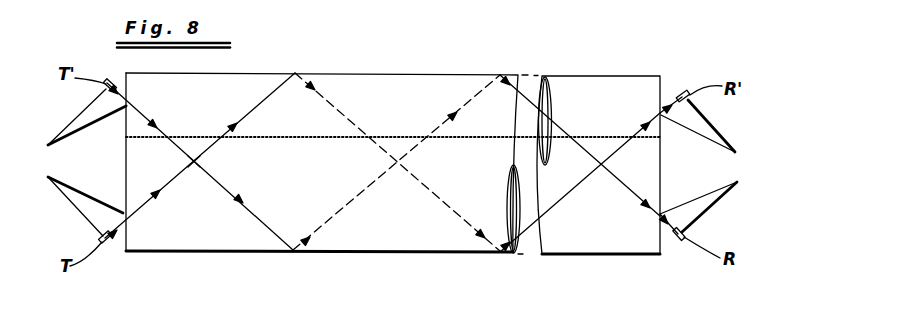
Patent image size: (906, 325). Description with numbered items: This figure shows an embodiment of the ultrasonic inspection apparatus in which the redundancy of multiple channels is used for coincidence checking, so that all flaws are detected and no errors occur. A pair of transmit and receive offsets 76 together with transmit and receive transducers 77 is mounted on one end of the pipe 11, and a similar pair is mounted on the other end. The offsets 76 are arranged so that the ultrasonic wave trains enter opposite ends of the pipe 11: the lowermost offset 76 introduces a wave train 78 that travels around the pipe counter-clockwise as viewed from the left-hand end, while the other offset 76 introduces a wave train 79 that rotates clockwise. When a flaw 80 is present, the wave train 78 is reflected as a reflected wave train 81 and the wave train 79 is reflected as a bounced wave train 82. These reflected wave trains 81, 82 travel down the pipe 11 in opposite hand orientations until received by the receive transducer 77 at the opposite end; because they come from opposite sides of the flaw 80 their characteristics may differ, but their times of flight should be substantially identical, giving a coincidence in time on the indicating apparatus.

The pipe 11 is at (473, 83).
The transmit and receive offset 76 is at (97, 107).
The transmit and receive transducer 77 is at (107, 78).
The wave train 78 is at (143, 206).
The wave train 79 is at (148, 117).
The flaw 80 is at (196, 162).
The reflected wave train 81 is at (330, 219).
The reflected wave train 82 is at (325, 100).